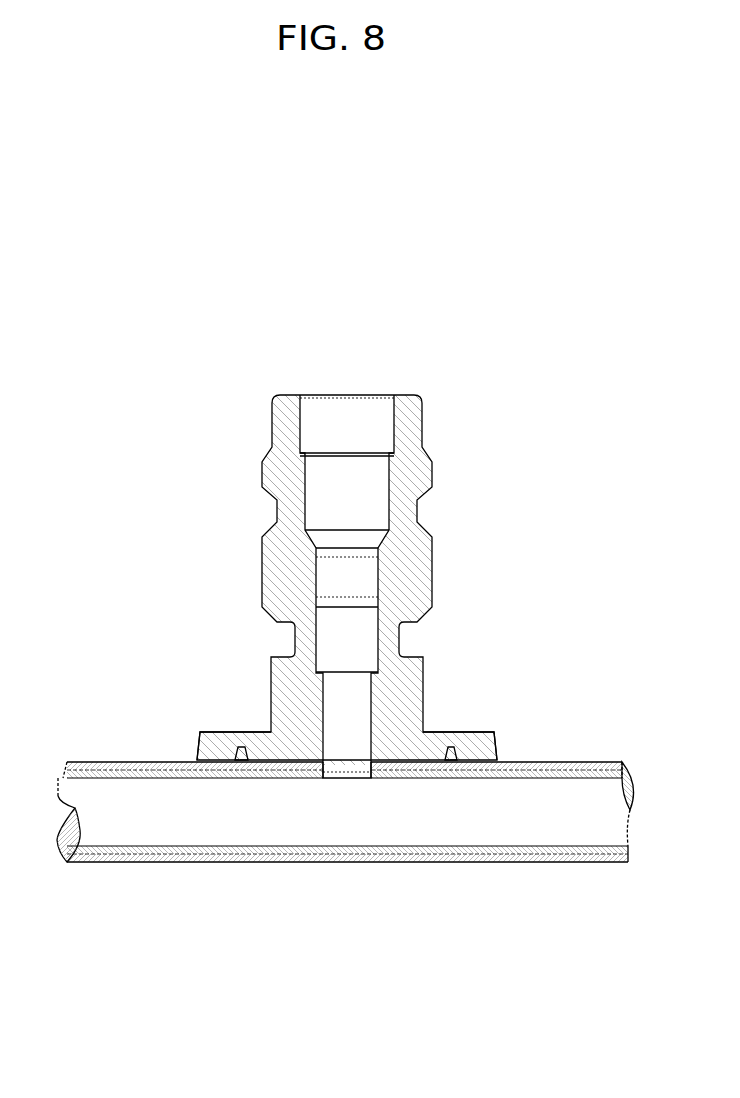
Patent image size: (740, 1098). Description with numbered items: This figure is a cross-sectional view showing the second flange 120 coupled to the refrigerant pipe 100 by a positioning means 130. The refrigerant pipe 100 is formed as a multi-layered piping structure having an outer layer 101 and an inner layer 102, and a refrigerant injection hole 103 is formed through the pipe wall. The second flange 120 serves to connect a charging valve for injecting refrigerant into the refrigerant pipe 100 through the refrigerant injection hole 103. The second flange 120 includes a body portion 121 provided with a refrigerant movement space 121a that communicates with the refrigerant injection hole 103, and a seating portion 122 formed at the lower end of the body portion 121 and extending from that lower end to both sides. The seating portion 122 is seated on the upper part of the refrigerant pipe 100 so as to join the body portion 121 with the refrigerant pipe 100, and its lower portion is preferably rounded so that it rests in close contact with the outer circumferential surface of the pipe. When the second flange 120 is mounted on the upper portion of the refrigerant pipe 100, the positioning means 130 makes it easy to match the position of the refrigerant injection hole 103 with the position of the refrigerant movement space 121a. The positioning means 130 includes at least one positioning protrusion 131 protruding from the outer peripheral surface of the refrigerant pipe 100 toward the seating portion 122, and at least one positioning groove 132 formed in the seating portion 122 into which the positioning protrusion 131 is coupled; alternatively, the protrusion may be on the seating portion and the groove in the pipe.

The refrigerant pipe 100 is at (345, 808).
The outer layer 101 is at (485, 862).
The inner layer 102 is at (532, 848).
The refrigerant injection hole 103 is at (346, 776).
The second flange 120 is at (359, 531).
The body portion 121 is at (261, 573).
The refrigerant movement space 121a is at (342, 720).
The seating portion 122 is at (217, 732).
The positioning means 130 is at (393, 696).
The positioning protrusion 131 is at (490, 732).
The positioning groove 132 is at (452, 748).